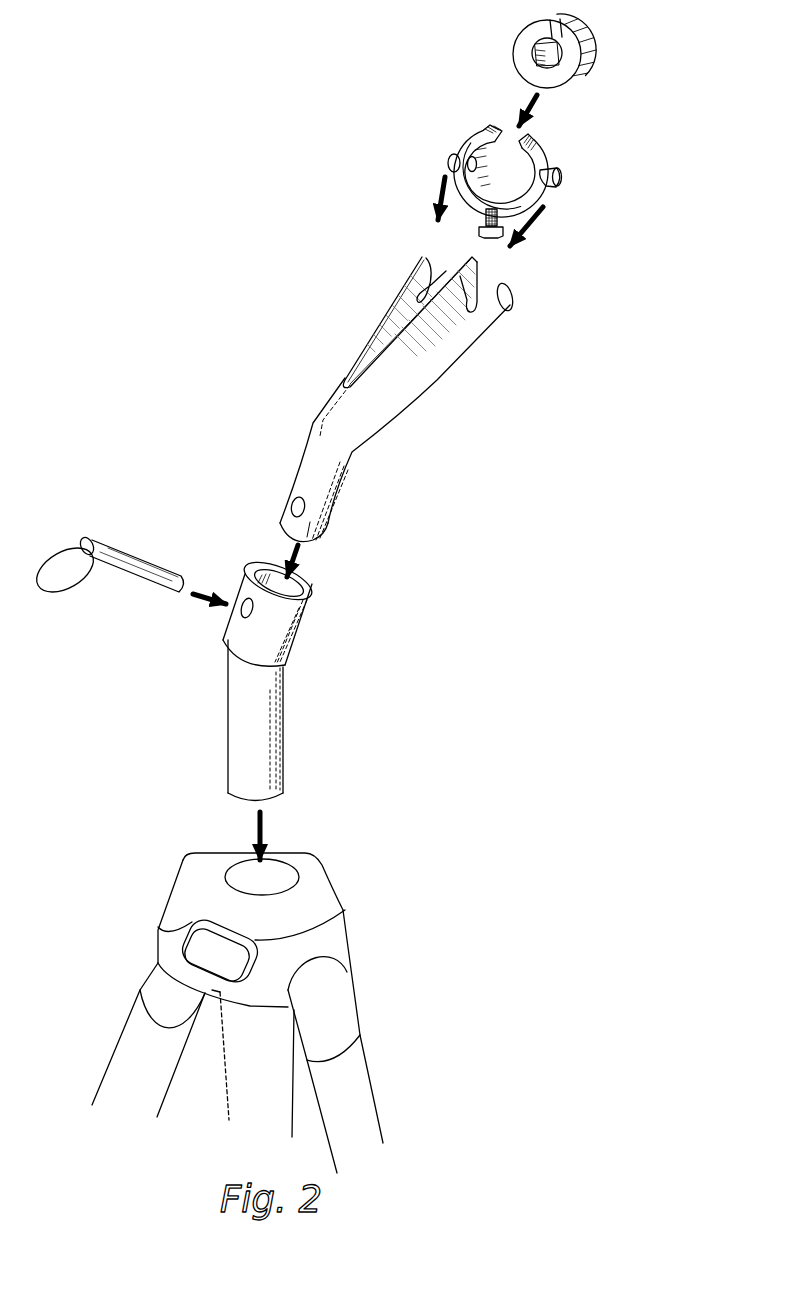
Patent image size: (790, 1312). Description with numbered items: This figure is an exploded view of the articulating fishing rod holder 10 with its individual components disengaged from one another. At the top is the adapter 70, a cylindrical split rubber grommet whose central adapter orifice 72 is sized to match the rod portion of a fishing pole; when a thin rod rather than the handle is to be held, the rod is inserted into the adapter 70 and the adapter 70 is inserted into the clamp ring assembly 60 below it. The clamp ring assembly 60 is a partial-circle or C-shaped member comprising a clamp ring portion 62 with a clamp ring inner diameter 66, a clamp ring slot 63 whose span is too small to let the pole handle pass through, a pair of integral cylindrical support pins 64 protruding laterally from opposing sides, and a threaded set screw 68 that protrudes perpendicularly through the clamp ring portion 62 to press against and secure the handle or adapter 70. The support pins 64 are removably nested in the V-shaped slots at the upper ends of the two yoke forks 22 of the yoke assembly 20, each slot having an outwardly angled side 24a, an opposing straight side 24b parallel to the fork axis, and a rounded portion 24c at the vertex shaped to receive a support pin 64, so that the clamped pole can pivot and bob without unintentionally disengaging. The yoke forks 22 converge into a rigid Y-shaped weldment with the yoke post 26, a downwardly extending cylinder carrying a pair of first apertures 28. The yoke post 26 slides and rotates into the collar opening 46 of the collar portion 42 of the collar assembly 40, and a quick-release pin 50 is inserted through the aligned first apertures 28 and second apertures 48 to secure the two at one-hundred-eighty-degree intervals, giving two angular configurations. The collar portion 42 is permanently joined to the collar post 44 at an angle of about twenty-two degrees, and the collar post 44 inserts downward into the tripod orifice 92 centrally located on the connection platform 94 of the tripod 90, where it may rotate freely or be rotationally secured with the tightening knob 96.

The articulating fishing rod holder 10 is at (198, 226).
The yoke assembly 20 is at (407, 427).
The yoke fork 22 is at (373, 342).
The yoke slot angled side 24a is at (425, 248).
The yoke slot straight side 24b is at (443, 258).
The yoke slot rounded portion 24c is at (512, 290).
The yoke post 26 is at (333, 512).
The first aperture 28 is at (292, 502).
The collar assembly 40 is at (302, 752).
The collar portion 42 is at (298, 637).
The collar post 44 is at (226, 742).
The collar opening 46 is at (268, 572).
The second aperture 48 is at (235, 610).
The quick-release pin 50 is at (135, 580).
The clamp ring assembly 60 is at (455, 103).
The clamp ring portion 62 is at (553, 148).
The clamp ring slot 63 is at (495, 128).
The support pin 64 is at (450, 158).
The clamp ring inner diameter 66 is at (468, 140).
The set screw 68 is at (493, 240).
The adapter 70 is at (587, 48).
The adapter orifice 72 is at (537, 57).
The tripod 90 is at (373, 1100).
The tripod orifice 92 is at (225, 870).
The connection platform 94 is at (349, 939).
The tightening knob 96 is at (205, 955).